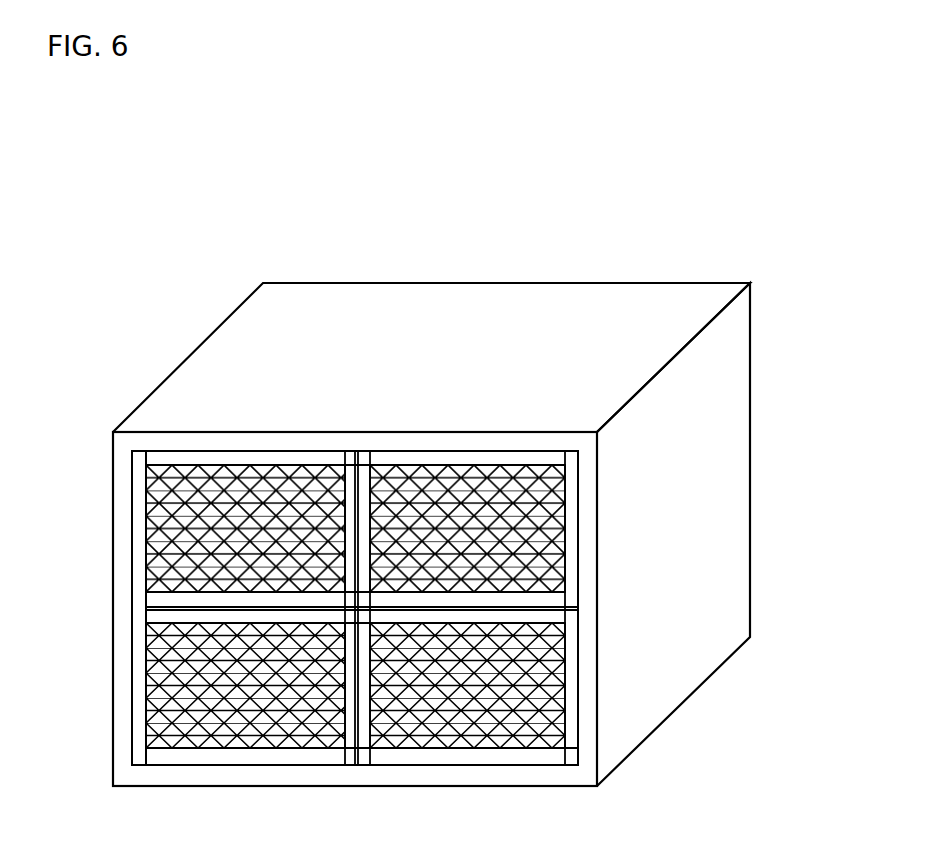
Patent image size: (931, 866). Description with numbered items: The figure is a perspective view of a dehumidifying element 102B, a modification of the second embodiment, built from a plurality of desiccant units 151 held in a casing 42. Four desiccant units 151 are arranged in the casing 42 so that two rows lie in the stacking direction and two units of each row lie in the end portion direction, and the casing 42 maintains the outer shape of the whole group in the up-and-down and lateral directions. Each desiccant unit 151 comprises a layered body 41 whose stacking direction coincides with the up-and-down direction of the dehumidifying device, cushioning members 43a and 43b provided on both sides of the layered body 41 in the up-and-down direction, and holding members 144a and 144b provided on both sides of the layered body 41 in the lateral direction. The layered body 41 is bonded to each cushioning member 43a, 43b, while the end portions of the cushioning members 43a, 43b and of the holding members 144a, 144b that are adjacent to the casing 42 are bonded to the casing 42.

The air cleaner / filter unit 102B is at (657, 254).
The casing 42 is at (725, 516).
The layered body 41 is at (140, 520).
The cushioning member 43a is at (148, 463).
The cushioning member 43b is at (146, 604).
The holding member 144a is at (364, 766).
The holding member 144b is at (578, 766).
The desiccant unit 151 is at (150, 562).